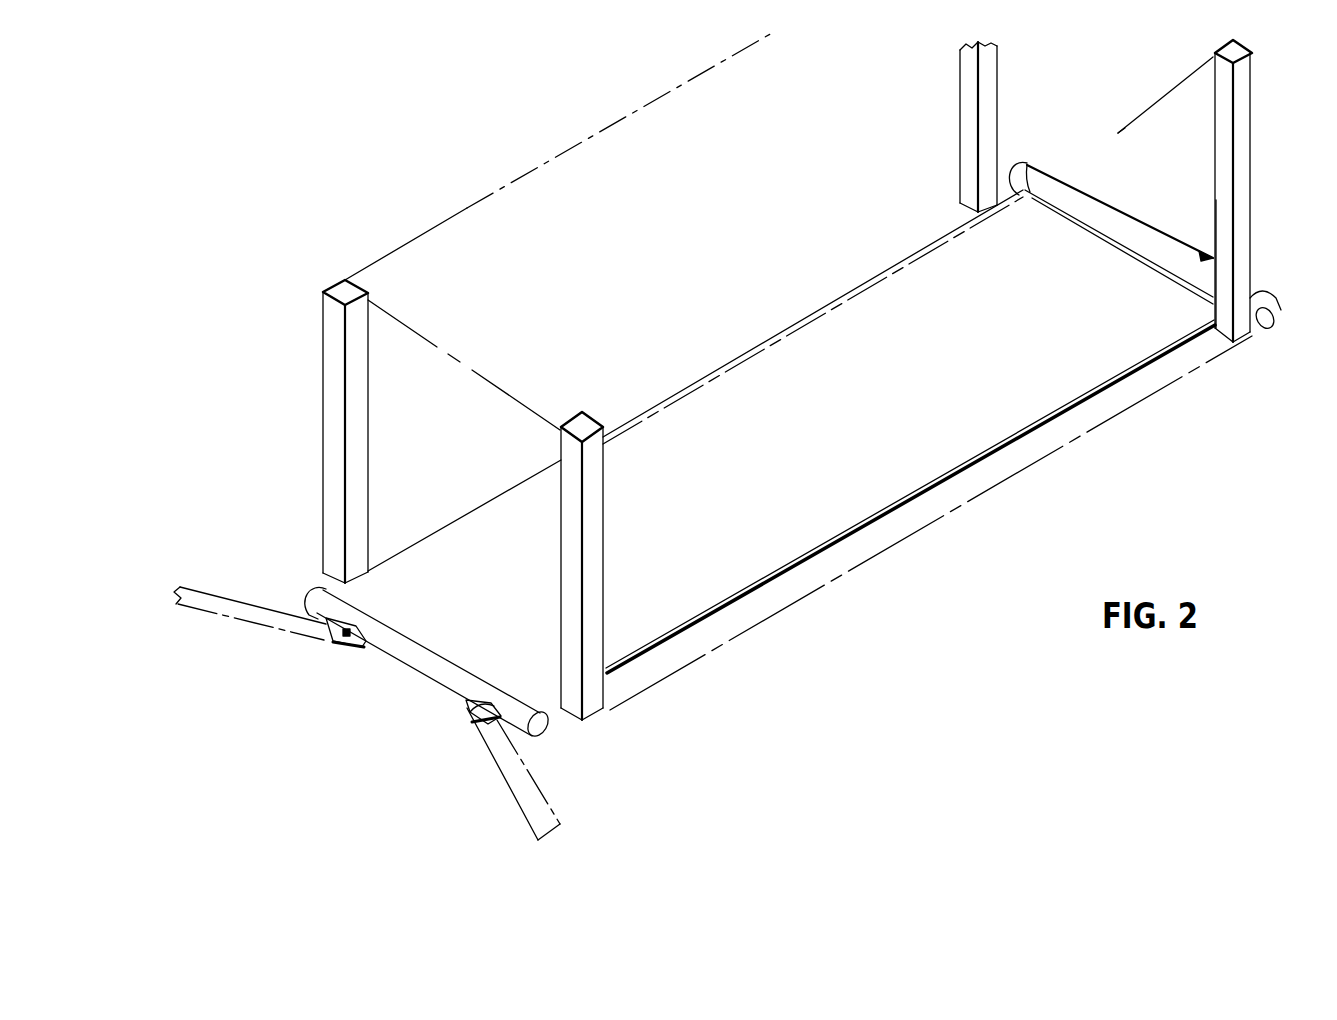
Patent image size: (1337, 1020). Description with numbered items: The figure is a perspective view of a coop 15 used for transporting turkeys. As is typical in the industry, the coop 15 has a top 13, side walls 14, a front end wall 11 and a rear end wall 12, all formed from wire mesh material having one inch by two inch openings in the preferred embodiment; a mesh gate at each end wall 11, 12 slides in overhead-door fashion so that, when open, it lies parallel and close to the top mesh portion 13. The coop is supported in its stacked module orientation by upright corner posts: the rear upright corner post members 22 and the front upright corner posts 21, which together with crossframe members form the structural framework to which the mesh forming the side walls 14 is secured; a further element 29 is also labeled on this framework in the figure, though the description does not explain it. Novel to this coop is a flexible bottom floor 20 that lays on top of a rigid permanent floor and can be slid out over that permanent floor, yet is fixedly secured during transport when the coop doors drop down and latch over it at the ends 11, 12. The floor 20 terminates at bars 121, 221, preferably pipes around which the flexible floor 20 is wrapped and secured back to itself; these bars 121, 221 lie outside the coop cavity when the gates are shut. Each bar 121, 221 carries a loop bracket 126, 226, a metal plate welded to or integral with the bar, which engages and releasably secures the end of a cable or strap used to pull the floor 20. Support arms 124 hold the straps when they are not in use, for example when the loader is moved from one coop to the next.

The front end wall 11 is at (433, 383).
The rear end wall 12 is at (1193, 118).
The top 13 is at (1012, 97).
The side walls 14 is at (462, 233).
The coop 15 is at (580, 118).
The flexible bottom floor 20 is at (673, 400).
The front upright corner posts 21 is at (325, 395).
The rear upright corner post members 22 is at (965, 80).
The post sleeve 29 is at (1168, 168).
The bar 121 is at (537, 713).
The support arms 124 is at (207, 592).
The loop bracket 126 is at (340, 640).
The bar 221 is at (1272, 320).
The loop bracket 226 is at (1083, 180).